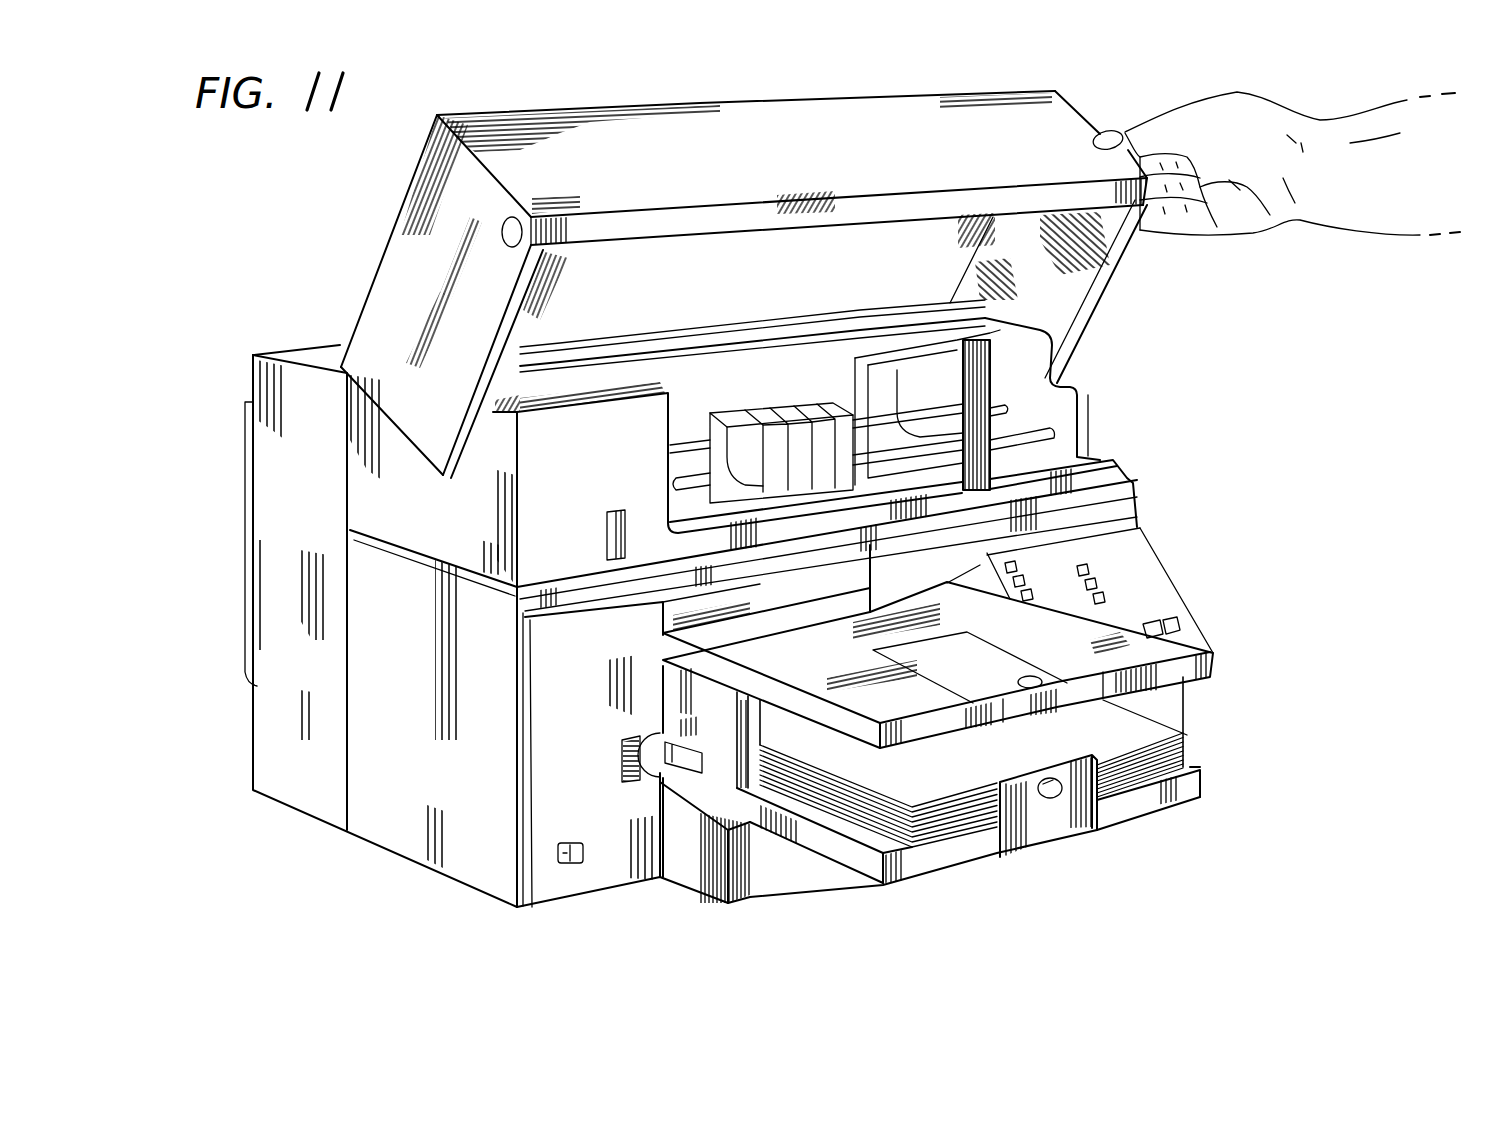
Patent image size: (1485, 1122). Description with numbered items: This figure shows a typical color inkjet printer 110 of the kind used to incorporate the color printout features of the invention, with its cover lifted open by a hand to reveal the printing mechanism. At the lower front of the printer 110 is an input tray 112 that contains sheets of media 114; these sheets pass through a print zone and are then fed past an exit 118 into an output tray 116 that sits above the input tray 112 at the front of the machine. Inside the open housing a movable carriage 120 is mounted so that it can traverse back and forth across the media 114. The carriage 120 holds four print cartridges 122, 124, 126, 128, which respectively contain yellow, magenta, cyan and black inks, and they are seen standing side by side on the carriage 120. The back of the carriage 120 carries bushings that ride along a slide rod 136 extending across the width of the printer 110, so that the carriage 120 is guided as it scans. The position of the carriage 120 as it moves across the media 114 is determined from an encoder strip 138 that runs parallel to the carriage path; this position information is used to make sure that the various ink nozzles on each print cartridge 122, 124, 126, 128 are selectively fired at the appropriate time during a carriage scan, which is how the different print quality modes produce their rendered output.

The printer 110 is at (1195, 506).
The input tray 112 is at (875, 862).
The sheets of media 114 is at (1190, 747).
The output tray 116 is at (1150, 652).
The exit 118 is at (732, 650).
The movable carriage 120 is at (720, 500).
The print cartridge 122 is at (737, 418).
The print cartridge 124 is at (760, 415).
The print cartridge 126 is at (788, 412).
The print cartridge 128 is at (820, 410).
The slide rod 136 is at (1030, 430).
The encoder strip 138 is at (917, 417).